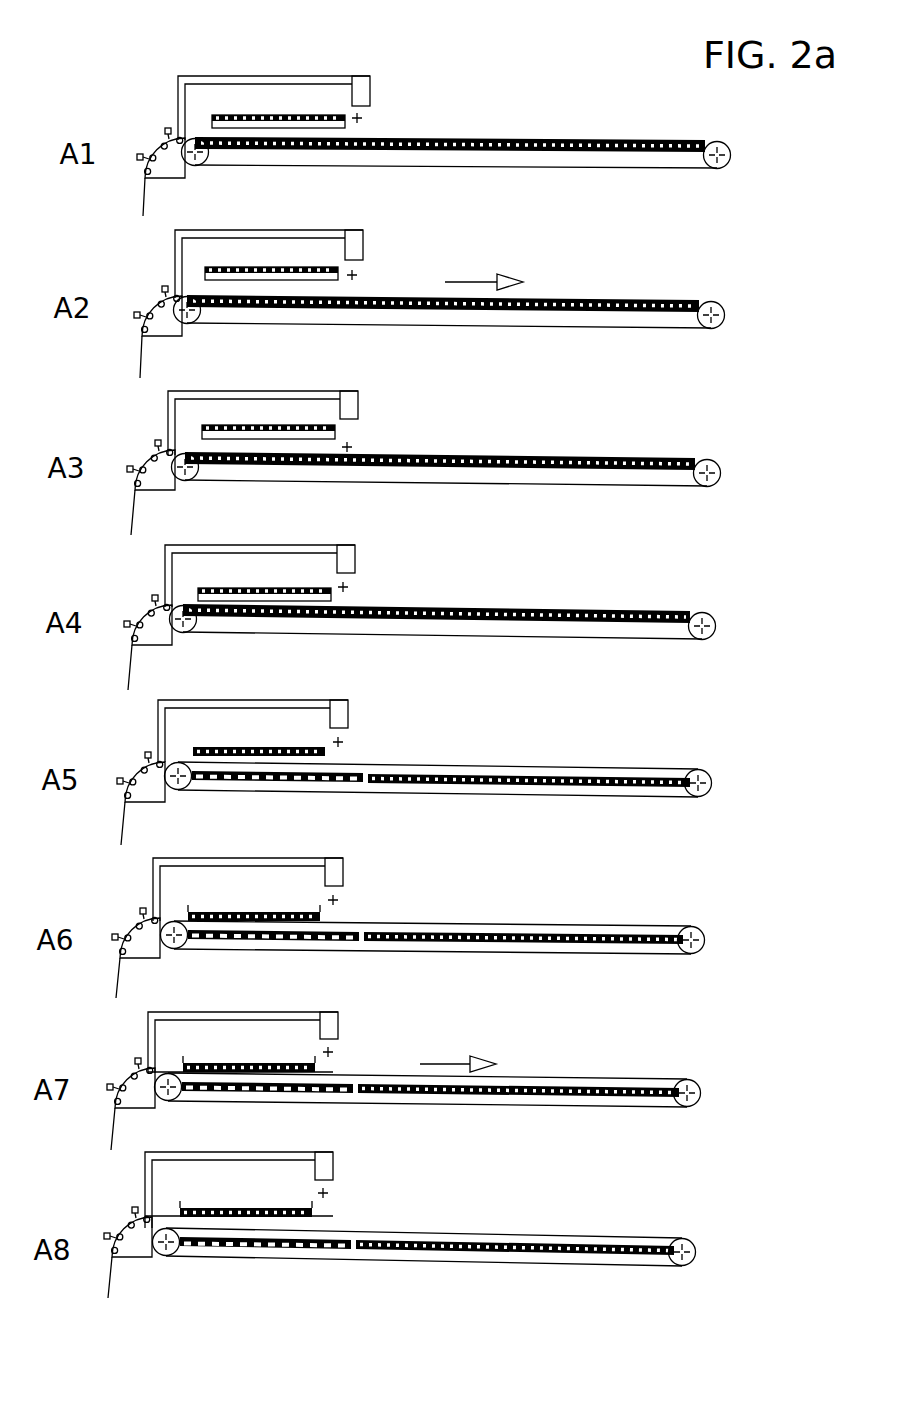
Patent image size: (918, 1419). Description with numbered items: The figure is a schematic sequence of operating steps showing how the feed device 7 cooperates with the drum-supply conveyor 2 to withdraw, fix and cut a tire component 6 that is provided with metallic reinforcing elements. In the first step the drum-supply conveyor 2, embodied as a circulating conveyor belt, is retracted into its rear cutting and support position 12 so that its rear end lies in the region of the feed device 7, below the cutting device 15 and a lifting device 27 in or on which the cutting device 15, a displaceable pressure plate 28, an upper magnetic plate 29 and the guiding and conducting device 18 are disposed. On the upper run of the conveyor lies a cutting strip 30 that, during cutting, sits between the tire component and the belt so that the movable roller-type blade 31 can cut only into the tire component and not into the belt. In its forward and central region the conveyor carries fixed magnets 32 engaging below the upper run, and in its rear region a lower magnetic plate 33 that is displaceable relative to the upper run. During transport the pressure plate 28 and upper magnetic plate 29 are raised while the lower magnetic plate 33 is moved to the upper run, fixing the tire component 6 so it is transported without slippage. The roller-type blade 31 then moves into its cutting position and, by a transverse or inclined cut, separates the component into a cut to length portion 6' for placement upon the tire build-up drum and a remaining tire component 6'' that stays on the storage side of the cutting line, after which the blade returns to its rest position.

The drum-supply conveyor 2 is at (565, 133).
The tire component 6 is at (93, 738).
The cut to length portion 6' is at (579, 724).
The tire component remaining on storage side 6'' is at (104, 823).
The feed device 7 is at (260, 72).
The rear cutting and support position 12 is at (232, 180).
The cutting device 15 is at (380, 82).
The guiding and conducting device 18 is at (167, 157).
The lifting device 27 is at (230, 78).
The displaceable pressure plate 28 is at (210, 118).
The upper magnetic plate 29 is at (277, 113).
The cutting strip 30 is at (357, 137).
The roller-type blade 31 is at (370, 113).
The fixed magnets 32 is at (540, 152).
The lower magnetic plate 33 is at (293, 150).